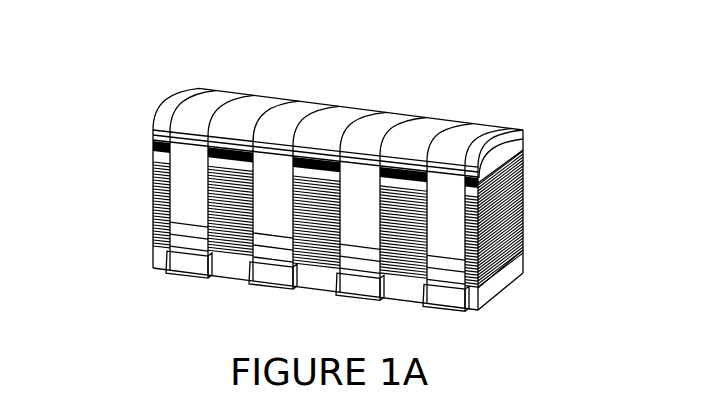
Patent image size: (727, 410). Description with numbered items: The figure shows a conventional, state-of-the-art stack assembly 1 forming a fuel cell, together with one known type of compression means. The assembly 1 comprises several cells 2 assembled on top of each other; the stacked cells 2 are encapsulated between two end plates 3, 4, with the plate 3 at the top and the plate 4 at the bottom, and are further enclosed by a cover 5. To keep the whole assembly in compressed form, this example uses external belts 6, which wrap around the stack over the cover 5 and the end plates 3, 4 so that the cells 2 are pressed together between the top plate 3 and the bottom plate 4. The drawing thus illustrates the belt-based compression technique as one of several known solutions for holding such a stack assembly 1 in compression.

The stack assembly 1 is at (100, 36).
The cells 2 is at (523, 203).
The end plate 3 is at (513, 163).
The end plate 4 is at (505, 288).
The cover 5 is at (253, 110).
The belts 6 is at (305, 125).